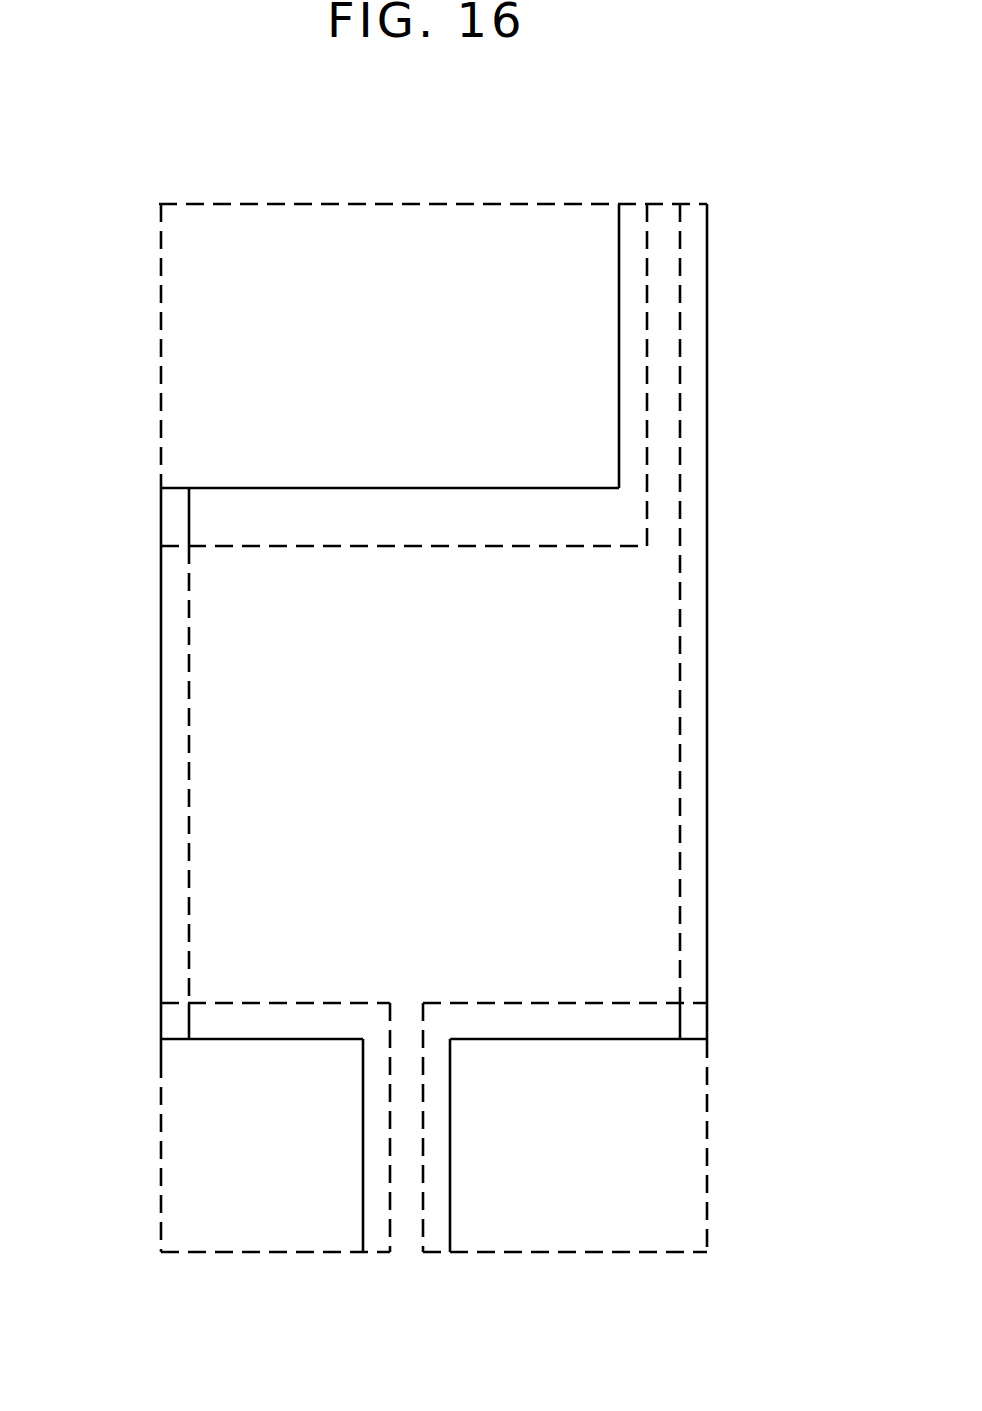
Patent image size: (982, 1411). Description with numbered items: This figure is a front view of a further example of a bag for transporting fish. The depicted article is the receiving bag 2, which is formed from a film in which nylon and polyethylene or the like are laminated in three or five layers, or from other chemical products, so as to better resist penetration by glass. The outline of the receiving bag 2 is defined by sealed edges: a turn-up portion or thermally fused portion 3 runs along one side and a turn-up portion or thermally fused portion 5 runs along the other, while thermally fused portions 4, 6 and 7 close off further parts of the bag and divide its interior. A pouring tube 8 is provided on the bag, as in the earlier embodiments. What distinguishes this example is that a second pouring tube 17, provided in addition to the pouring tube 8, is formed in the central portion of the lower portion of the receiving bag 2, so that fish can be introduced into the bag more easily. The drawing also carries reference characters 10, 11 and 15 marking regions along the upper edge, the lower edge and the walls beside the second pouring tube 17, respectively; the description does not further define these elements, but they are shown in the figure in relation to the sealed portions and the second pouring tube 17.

The receiving bag 2 is at (708, 637).
The turn-up portion 3 is at (690, 743).
The thermally fused portion 4 is at (223, 1020).
The turn-up portion 5 is at (178, 748).
The thermally fused portion 6 is at (450, 518).
The thermally fused portion 7 is at (637, 327).
The pouring tube 8 is at (707, 333).
The electrode pattern 10 is at (518, 204).
The electrode pattern 11 is at (493, 1253).
The electrode finger 15 is at (377, 1158).
The second pouring tube 17 is at (360, 1078).